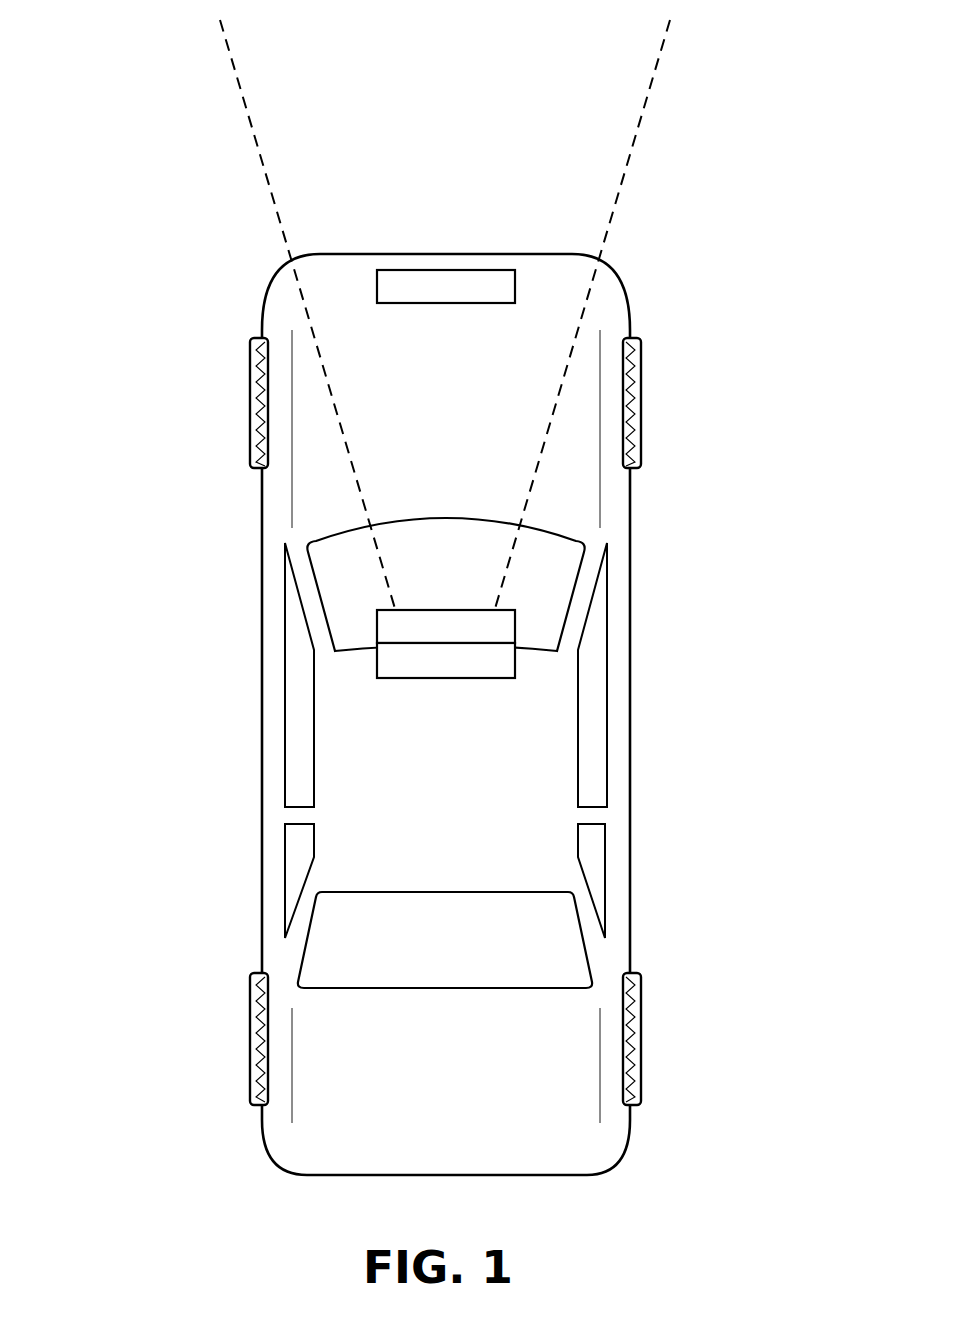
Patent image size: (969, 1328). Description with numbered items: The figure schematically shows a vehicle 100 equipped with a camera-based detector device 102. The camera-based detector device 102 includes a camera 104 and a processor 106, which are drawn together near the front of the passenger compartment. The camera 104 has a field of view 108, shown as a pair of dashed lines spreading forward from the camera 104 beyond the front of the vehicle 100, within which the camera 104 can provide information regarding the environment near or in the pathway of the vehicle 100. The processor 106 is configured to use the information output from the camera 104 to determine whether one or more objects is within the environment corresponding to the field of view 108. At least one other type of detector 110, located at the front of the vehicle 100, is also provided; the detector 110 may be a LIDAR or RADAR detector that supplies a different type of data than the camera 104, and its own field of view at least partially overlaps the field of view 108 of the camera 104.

The vehicle 100 is at (203, 298).
The camera-based detector device 102 is at (439, 640).
The camera 104 is at (388, 617).
The processor 106 is at (387, 677).
The field of view 108 is at (638, 125).
The detector 110 is at (490, 270).